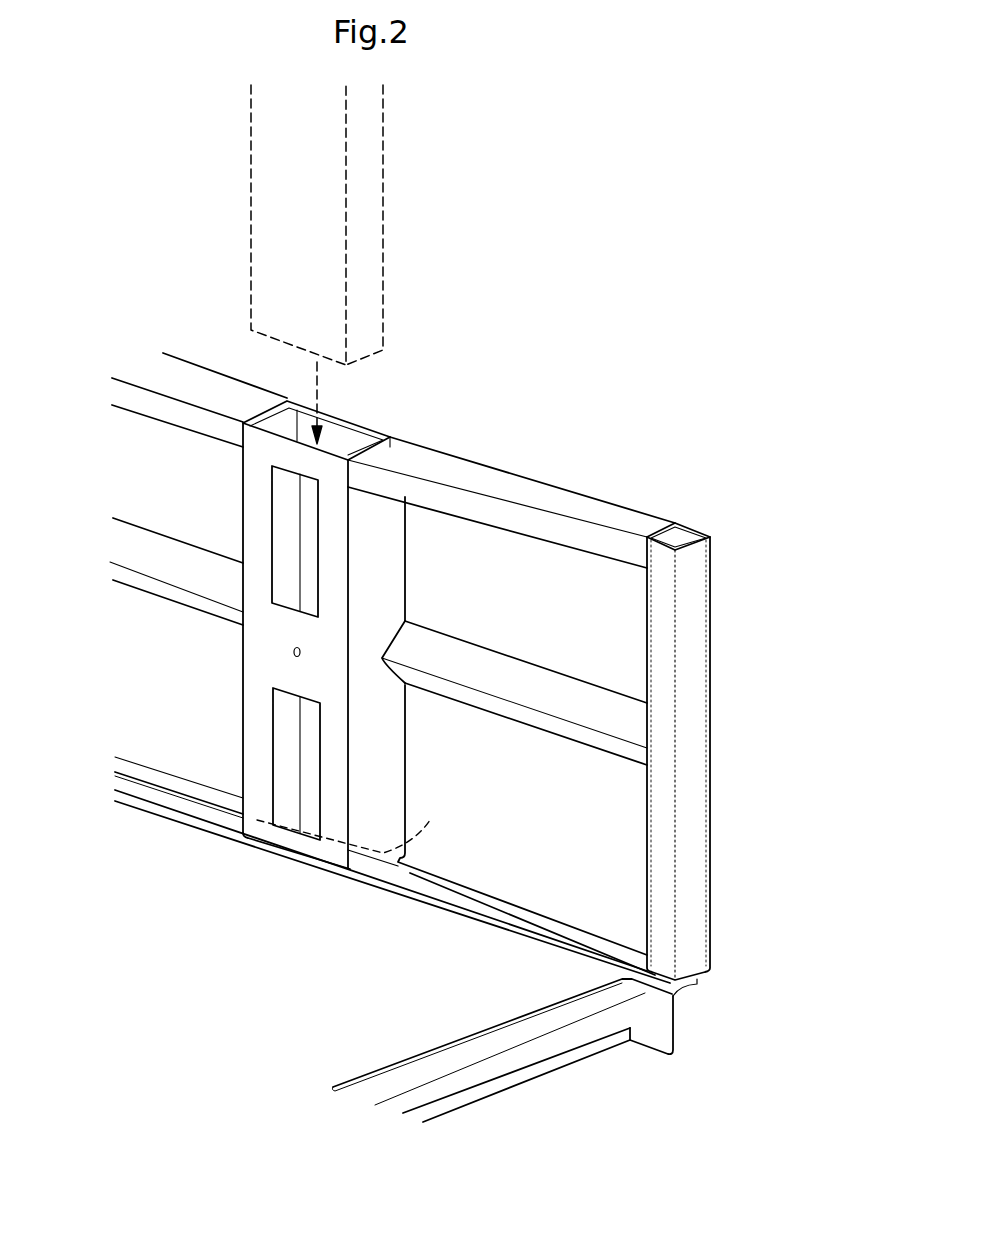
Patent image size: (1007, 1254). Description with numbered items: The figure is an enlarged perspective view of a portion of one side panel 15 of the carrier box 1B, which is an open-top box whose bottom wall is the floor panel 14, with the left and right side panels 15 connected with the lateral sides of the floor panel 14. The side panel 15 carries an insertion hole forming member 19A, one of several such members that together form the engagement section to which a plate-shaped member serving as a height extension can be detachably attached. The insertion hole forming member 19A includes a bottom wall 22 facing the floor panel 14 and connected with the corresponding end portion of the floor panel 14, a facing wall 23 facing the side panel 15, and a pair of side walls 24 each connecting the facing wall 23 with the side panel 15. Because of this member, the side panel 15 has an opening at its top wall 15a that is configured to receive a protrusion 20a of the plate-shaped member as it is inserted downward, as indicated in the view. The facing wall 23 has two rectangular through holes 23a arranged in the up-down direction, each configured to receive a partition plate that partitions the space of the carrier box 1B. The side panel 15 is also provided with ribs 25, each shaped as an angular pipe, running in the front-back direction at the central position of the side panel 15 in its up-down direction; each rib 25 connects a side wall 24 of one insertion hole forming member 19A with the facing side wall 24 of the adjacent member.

The carrier box 1B is at (590, 1077).
The floor panel 14 is at (488, 958).
The side panel 15 is at (712, 662).
The top wall 15a is at (497, 492).
The insertion hole forming member 19A is at (366, 688).
The protrusion 20a is at (383, 217).
The bottom wall 22 is at (361, 829).
The facing wall 23 is at (280, 667).
The through hole 23a is at (290, 470).
The side wall 24 is at (383, 718).
The rib 25 is at (150, 548).